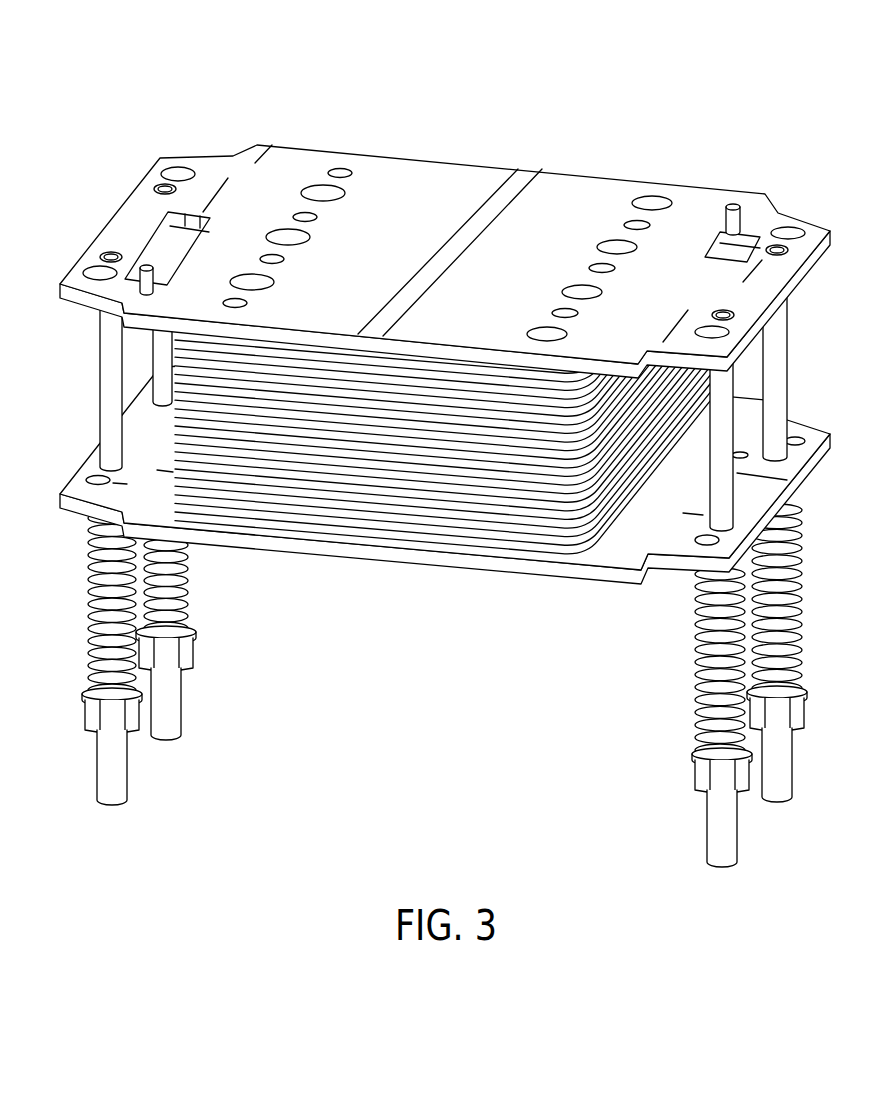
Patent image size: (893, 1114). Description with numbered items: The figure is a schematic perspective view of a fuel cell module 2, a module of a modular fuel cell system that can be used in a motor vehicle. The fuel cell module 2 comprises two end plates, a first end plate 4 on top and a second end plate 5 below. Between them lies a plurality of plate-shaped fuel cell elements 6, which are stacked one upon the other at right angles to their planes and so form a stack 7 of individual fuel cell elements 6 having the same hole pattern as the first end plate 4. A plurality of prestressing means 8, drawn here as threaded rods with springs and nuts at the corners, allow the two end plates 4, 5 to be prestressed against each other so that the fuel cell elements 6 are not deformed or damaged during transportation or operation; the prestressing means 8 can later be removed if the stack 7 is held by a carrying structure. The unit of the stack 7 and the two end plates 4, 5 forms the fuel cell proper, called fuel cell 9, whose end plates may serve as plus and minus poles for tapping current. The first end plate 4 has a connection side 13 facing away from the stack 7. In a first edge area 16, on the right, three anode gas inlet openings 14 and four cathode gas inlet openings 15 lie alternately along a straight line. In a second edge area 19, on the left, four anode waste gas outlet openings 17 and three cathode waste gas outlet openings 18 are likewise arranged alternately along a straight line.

The fuel cell module 2 is at (712, 62).
The first end plate 4 is at (720, 186).
The second end plate 5 is at (816, 430).
The fuel cell elements 6 is at (400, 512).
The stack 7 is at (617, 537).
The prestressing means 8 is at (173, 698).
The fuel cell 9 is at (334, 599).
The connection side 13 is at (490, 178).
The anode gas inlet opening 14 is at (622, 225).
The cathode gas inlet opening 15 is at (671, 206).
The first edge area 16 is at (660, 185).
The anode waste gas outlet opening 17 is at (352, 175).
The cathode waste gas outlet opening 18 is at (303, 190).
The second edge area 19 is at (338, 163).